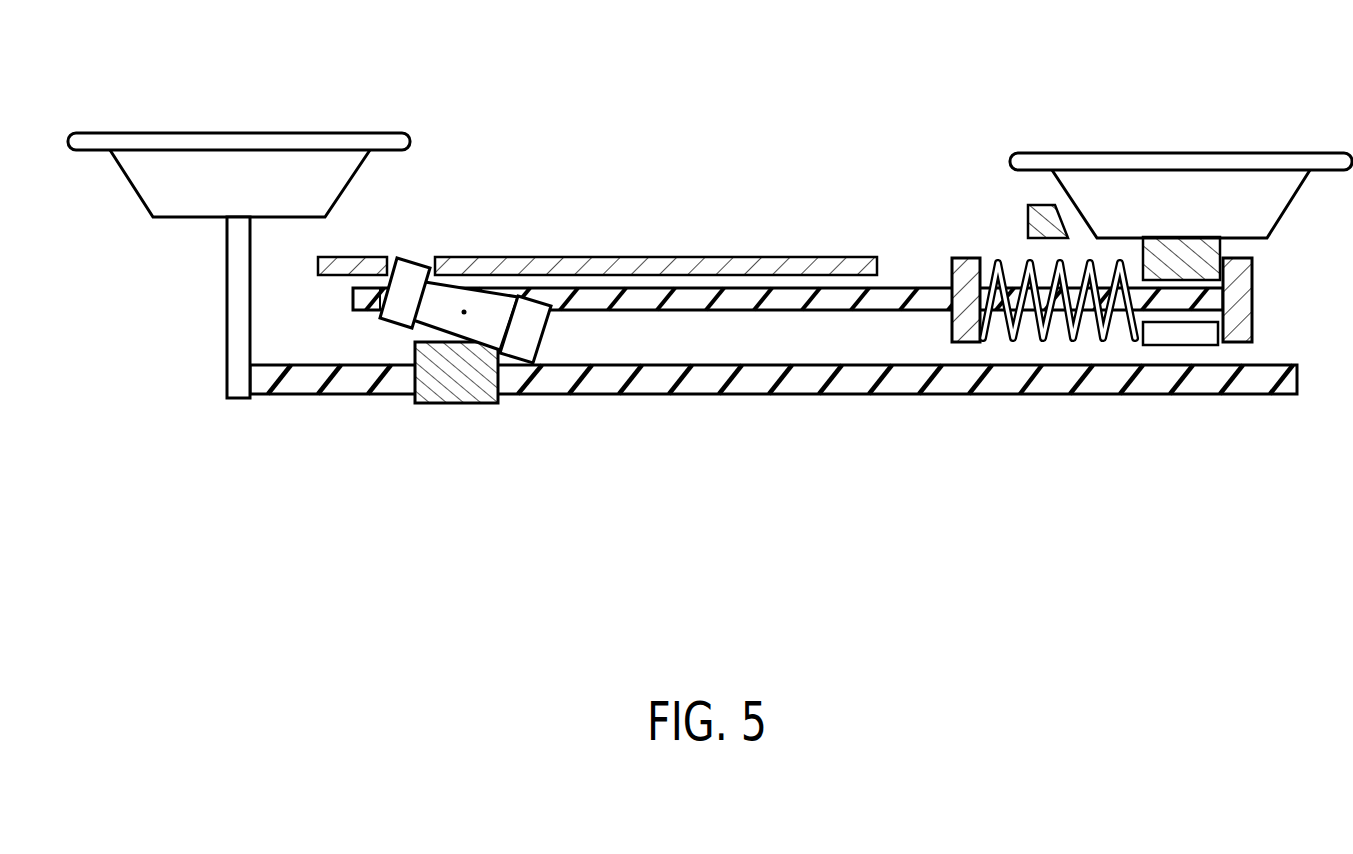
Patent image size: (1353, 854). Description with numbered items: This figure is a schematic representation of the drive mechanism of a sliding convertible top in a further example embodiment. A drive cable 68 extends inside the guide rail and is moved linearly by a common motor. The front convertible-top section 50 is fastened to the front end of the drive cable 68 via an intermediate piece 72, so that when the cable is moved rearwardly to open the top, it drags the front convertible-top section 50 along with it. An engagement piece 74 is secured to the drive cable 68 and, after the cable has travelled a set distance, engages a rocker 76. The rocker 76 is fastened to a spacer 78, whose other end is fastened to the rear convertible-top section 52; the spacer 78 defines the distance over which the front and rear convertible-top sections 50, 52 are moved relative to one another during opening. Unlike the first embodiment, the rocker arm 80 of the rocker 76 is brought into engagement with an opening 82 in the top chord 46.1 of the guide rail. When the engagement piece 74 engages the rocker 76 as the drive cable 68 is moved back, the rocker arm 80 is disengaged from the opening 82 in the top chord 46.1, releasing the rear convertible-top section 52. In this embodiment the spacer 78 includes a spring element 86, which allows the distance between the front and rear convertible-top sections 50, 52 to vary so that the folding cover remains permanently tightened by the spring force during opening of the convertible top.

The top chord 46.1 is at (638, 262).
The front convertible-top section 50 is at (235, 167).
The rear convertible-top section 52 is at (1153, 168).
The drive cable 68 is at (636, 378).
The intermediate piece 72 is at (235, 333).
The engagement piece 74 is at (462, 385).
The rocker 76 is at (453, 298).
The spacer 78 is at (792, 300).
The rocker arm 80 is at (397, 302).
The opening 82 is at (420, 248).
The spring element 86 is at (1003, 358).